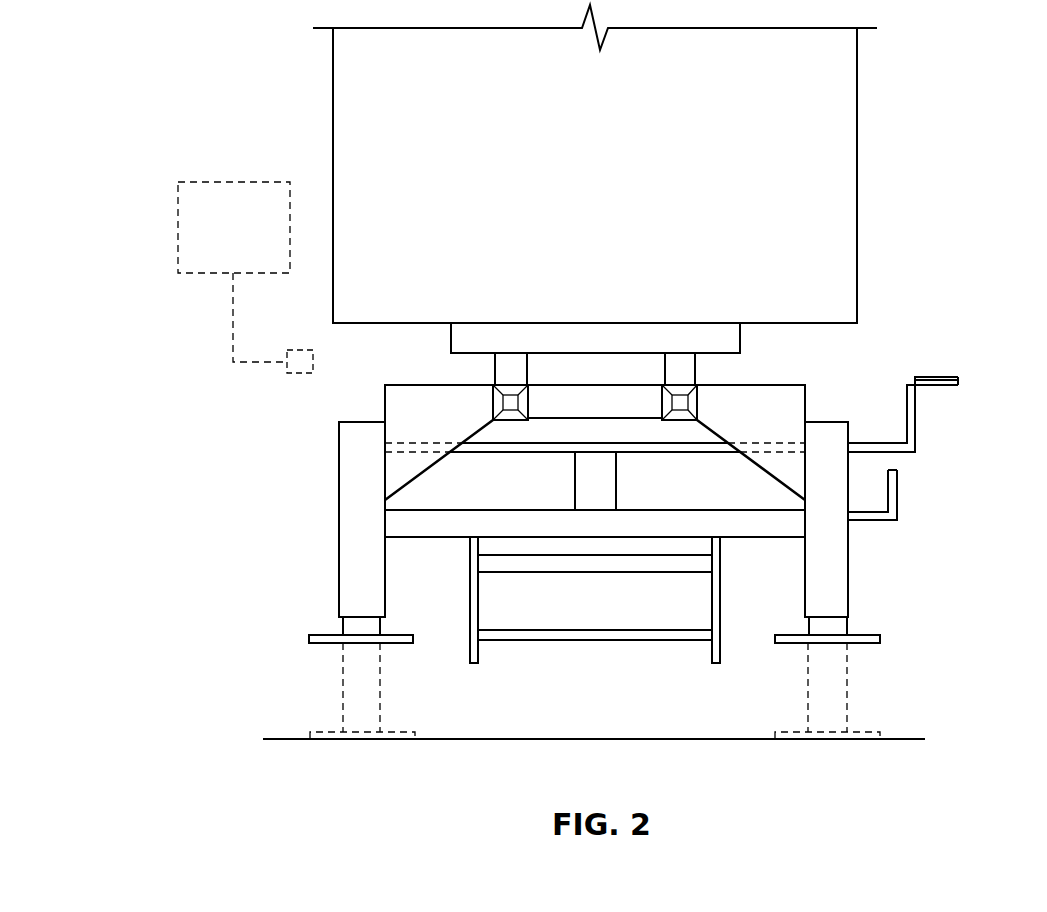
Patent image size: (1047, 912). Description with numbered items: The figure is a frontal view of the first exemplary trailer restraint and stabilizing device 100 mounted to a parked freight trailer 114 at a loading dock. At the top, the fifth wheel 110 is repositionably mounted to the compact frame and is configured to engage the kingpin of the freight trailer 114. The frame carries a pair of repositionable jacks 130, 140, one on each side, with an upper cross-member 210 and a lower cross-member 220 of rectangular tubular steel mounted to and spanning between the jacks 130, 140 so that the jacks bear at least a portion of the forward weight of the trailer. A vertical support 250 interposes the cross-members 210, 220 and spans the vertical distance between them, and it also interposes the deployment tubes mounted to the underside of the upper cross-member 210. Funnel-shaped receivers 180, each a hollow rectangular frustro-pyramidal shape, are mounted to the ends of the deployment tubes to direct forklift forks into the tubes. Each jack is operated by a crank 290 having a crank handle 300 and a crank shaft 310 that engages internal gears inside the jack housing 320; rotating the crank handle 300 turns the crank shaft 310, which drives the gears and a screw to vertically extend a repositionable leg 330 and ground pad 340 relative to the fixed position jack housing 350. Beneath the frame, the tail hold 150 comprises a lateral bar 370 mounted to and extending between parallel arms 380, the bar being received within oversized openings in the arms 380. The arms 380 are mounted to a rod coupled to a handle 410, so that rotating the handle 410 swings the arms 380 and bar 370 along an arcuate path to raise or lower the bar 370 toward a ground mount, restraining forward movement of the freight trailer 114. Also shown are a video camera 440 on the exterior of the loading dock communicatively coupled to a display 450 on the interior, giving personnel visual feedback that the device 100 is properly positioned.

The trailer restraint and stabilizing device 100 is at (307, 467).
The fifth wheel 110 is at (515, 347).
The freight trailer 114 is at (620, 199).
The jack 130 is at (355, 572).
The jack 140 is at (838, 580).
The tail hold 150 is at (583, 560).
The funnel-shaped receiver 180 is at (493, 403).
The upper cross-member 210 is at (710, 447).
The lower cross-member 220 is at (487, 517).
The vertical support 250 is at (592, 475).
The crank 290 is at (917, 420).
The crank handle 300 is at (933, 378).
The crank shaft 310 is at (525, 448).
The jack housing 320 is at (357, 433).
The repositionable leg 330 is at (350, 628).
The ground pad 340 is at (307, 637).
The fixed position jack housing 350 is at (355, 523).
The lateral bar 370 is at (628, 635).
The parallel arms 380 is at (467, 647).
The handle 410 is at (897, 497).
The video camera 440 is at (302, 350).
The display 450 is at (233, 192).